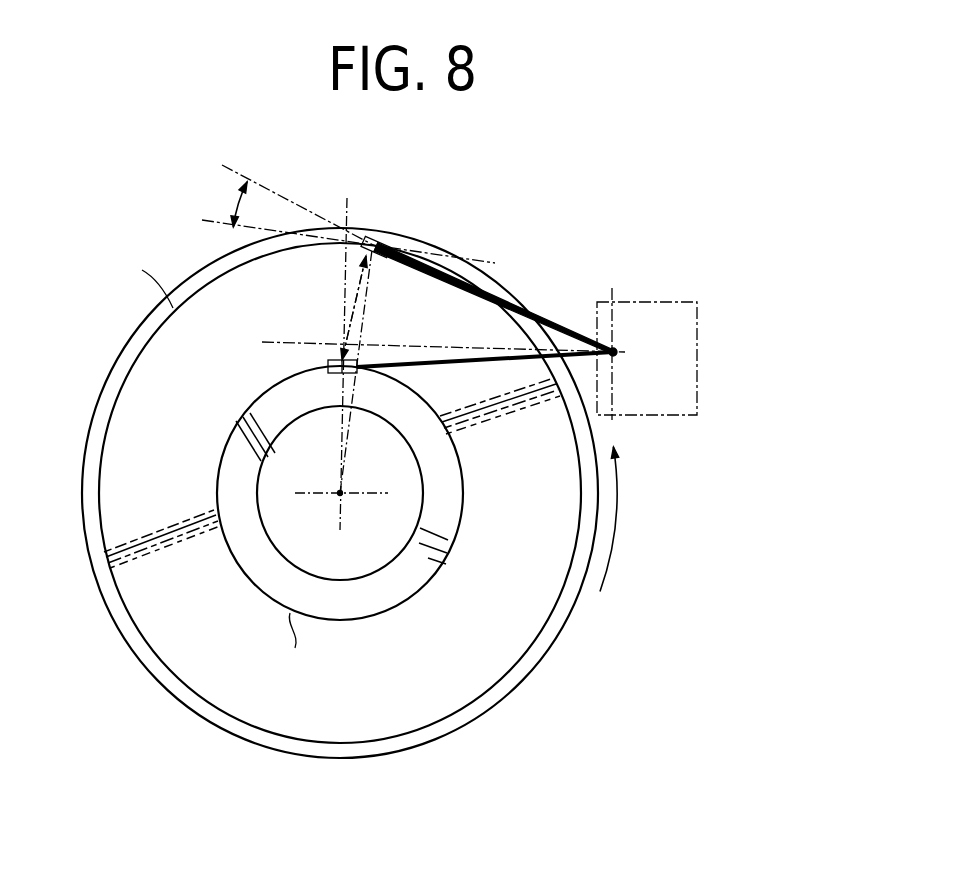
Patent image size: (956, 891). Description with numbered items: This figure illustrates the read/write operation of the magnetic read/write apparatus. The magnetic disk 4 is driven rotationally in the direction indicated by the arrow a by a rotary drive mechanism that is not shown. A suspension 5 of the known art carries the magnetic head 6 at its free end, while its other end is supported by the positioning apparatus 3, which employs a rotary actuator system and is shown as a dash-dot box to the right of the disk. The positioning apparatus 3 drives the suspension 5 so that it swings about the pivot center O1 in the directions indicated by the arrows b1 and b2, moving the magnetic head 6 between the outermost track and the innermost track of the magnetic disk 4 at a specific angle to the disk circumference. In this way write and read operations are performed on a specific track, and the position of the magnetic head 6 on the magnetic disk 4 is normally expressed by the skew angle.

The magnetic disk 4 is at (485, 717).
The magnetic head 6 is at (371, 236).
The suspension 5 is at (535, 332).
The positioning apparatus 3 is at (681, 417).
The pivot center O1 is at (613, 350).
The direction of disk rotation a is at (618, 540).
The direction of suspension drive b1 is at (347, 313).
The direction of suspension drive b2 is at (354, 308).